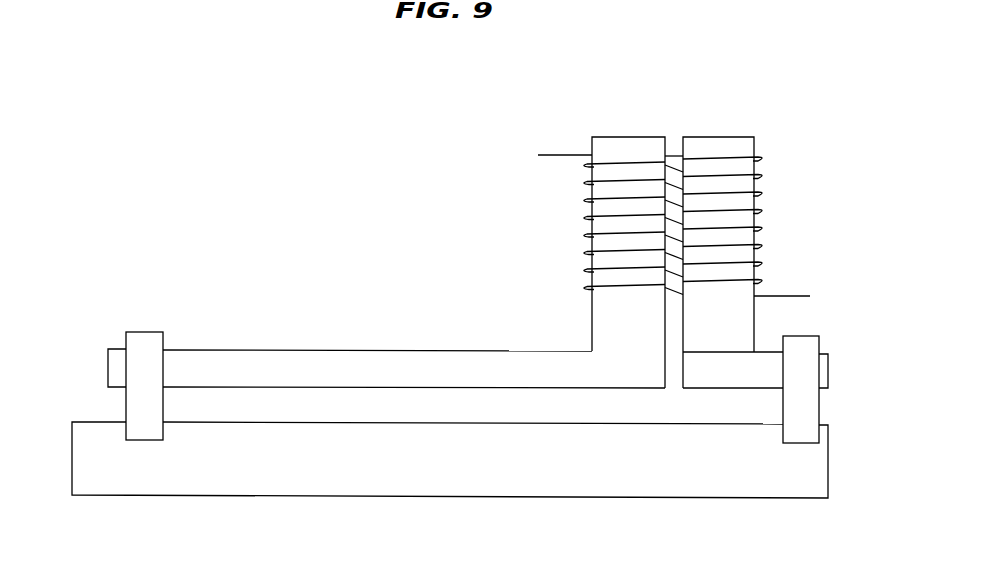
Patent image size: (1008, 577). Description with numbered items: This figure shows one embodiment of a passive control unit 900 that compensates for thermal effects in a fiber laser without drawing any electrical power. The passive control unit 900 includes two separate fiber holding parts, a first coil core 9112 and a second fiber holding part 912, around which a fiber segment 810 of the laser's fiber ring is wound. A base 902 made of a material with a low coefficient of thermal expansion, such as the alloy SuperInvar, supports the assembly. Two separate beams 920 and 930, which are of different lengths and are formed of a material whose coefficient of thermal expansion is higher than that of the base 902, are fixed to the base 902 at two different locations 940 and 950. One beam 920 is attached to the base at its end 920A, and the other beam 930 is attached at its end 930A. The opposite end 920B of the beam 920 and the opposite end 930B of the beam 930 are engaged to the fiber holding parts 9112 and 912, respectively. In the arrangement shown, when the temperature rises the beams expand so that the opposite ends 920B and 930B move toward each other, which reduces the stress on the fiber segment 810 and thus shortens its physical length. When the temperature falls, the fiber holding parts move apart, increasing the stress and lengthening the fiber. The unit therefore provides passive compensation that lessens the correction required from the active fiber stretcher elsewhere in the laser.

The passive control unit 900 is at (286, 93).
The base 902 is at (485, 480).
The fiber segment 810 is at (557, 155).
The first coil core 9112 is at (628, 137).
The fiber holding part 912 is at (718, 137).
The beam 920 is at (486, 350).
The end of beam 920A is at (108, 349).
The opposite end of beam 920B is at (648, 388).
The beam 930 is at (773, 352).
The end of beam 930A is at (828, 370).
The opposite end of beam 930B is at (692, 389).
The location of base 940 is at (143, 332).
The location of base 950 is at (810, 336).